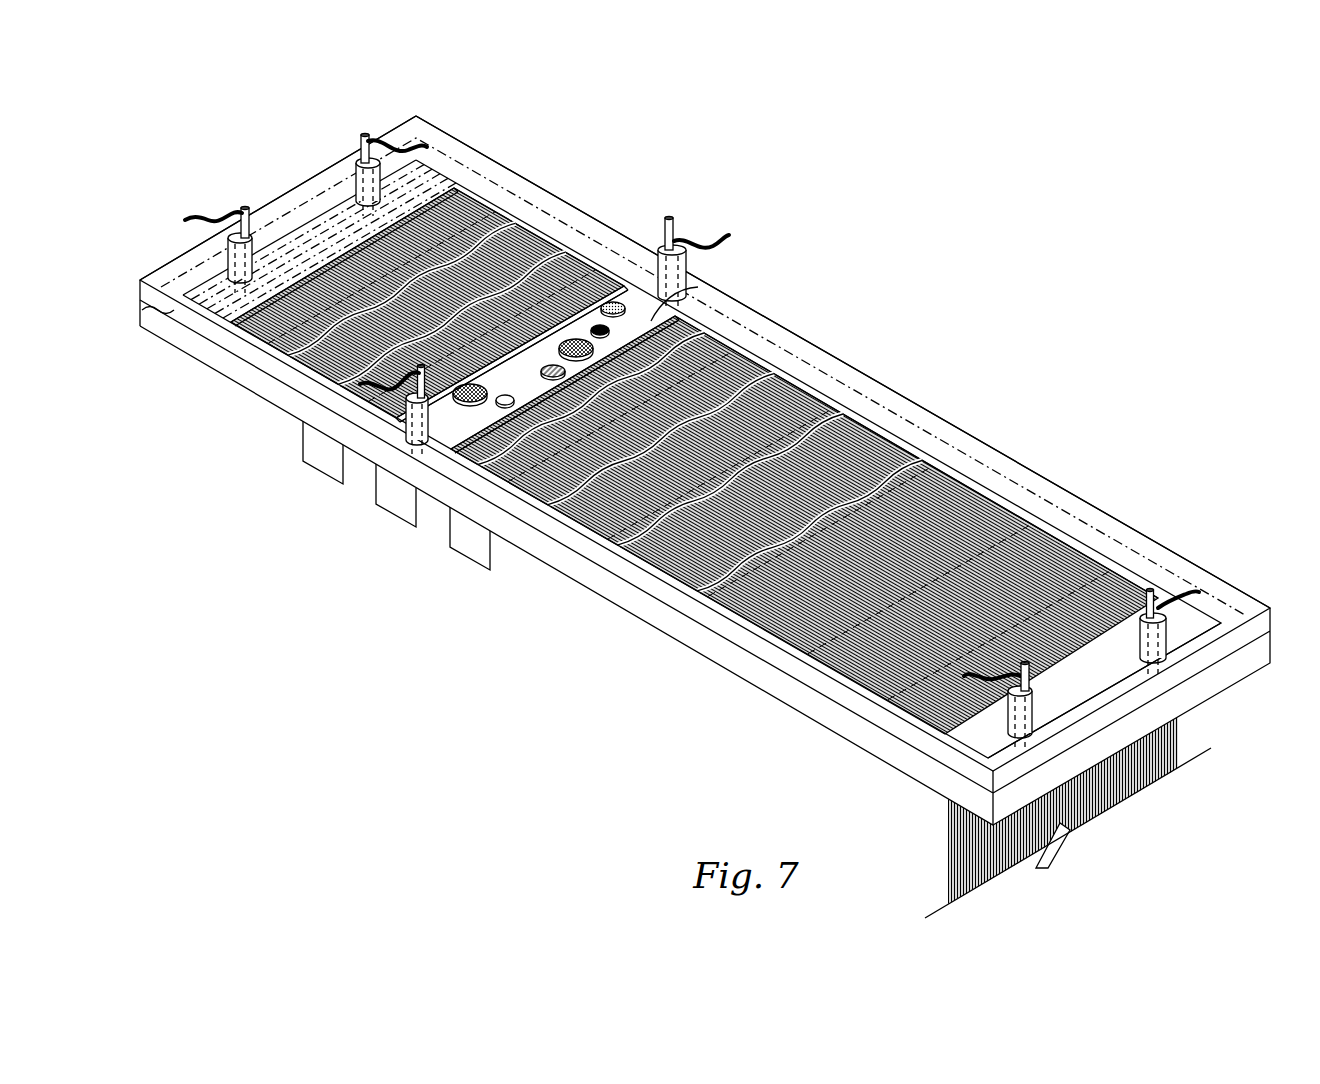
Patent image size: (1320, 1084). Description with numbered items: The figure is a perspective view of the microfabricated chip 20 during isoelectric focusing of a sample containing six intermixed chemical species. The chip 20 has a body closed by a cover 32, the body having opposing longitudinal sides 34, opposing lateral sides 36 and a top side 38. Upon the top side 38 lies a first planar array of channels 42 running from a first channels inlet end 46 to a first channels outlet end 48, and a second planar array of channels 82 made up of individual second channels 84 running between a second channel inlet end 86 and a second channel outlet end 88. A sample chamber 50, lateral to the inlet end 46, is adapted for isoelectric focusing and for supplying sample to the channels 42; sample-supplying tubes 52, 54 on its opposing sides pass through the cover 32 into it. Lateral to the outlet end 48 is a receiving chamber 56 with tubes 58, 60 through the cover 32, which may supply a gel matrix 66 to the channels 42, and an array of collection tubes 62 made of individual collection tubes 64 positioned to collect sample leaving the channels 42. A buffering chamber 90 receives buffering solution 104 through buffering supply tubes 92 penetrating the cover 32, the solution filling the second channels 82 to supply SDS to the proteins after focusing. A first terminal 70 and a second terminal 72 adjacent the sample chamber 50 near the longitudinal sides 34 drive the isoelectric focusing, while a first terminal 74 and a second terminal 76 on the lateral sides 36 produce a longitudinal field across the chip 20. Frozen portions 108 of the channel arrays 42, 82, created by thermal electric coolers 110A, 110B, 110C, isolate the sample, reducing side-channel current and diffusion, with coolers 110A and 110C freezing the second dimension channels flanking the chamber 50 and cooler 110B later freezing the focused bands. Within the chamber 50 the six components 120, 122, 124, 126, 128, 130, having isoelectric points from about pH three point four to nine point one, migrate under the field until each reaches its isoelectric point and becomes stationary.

The microfabricated chip 20 is at (275, 111).
The cover 32 is at (132, 315).
The opposing longitudinal sides 34 is at (609, 596).
The opposing lateral sides 36 is at (1171, 696).
The top side 38 is at (948, 456).
The first planar array of channels 42 is at (878, 430).
The first channels inlet end 46 is at (690, 279).
The first channels outlet end 48 is at (1073, 648).
The sample chamber 50 is at (622, 312).
The sample-supplying tube 52 is at (398, 432).
The sample-supplying tube 54 is at (665, 212).
The receiving chamber 56 is at (1193, 630).
The tube 58 is at (1028, 675).
The tube 60 is at (1143, 580).
The array of collection tubes 62 is at (934, 827).
The collection tube 64 is at (1142, 780).
The gel matrix 66 is at (790, 387).
The first terminal 70 is at (390, 414).
The second terminal 72 is at (720, 224).
The first terminal 74 is at (177, 211).
The second terminal 76 is at (956, 670).
The second planar array of channels 82 is at (548, 235).
The second channel 84 is at (485, 195).
The second channel inlet end 86 is at (452, 165).
The second channel outlet end 88 is at (552, 340).
The buffering chamber 90 is at (311, 241).
The buffering supply tubes 92 is at (237, 200).
The buffering solution 104 is at (290, 219).
The frozen portions 108 is at (700, 325).
The thermal electric cooler 110A is at (313, 458).
The thermal electric cooler 110B is at (397, 503).
The thermal electric cooler 110C is at (470, 543).
The component 120 is at (596, 316).
The component 122 is at (567, 332).
The component 124 is at (490, 393).
The component 126 is at (353, 390).
The component 128 is at (533, 364).
The component 130 is at (603, 294).